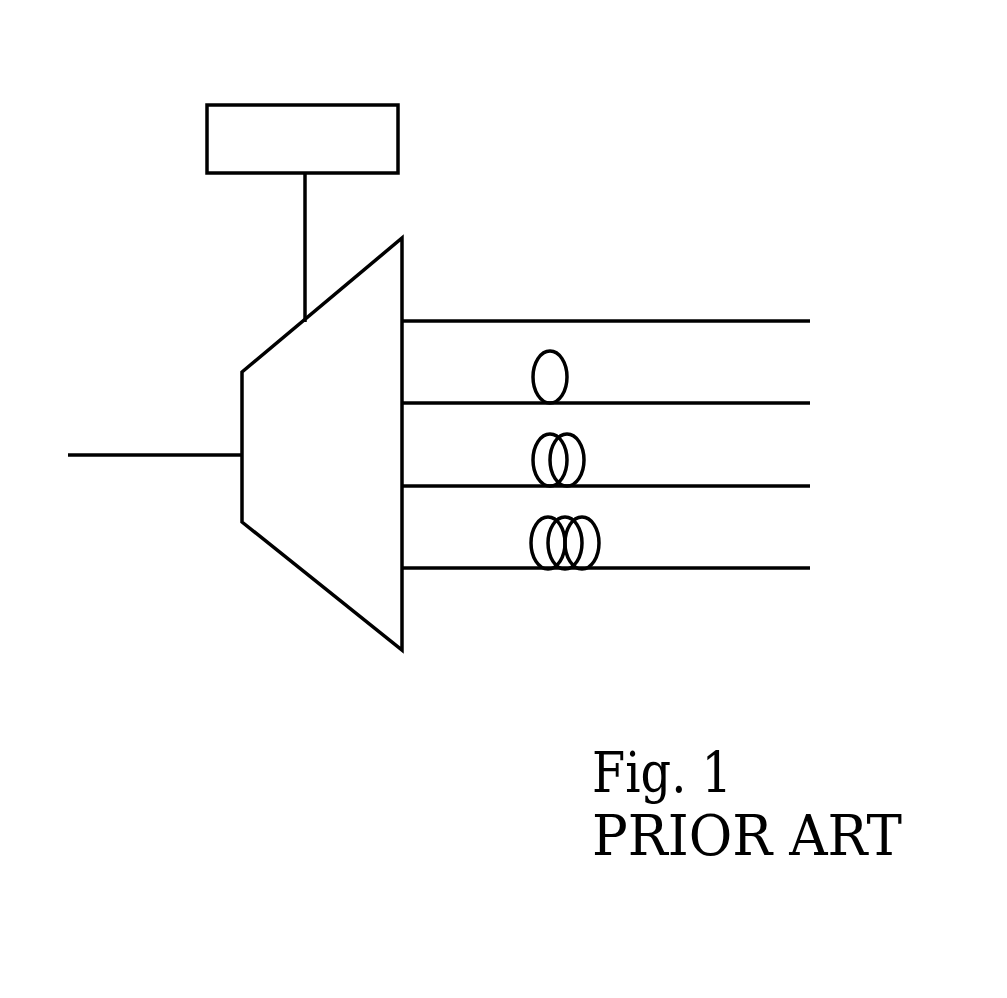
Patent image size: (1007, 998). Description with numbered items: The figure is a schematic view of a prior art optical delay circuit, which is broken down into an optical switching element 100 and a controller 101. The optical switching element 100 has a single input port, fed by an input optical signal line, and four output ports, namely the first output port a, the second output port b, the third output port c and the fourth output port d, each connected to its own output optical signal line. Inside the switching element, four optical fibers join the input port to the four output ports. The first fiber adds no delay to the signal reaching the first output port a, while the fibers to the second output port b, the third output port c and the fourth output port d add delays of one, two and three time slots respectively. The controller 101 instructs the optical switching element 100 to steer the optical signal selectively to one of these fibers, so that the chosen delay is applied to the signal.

The optical switching element 100 is at (302, 575).
The controller 101 is at (345, 105).
The first output port a is at (405, 320).
The second output port b is at (405, 402).
The third output port c is at (405, 485).
The fourth output port d is at (405, 567).